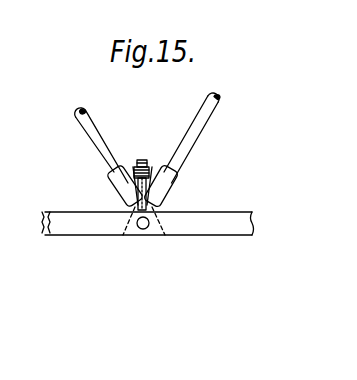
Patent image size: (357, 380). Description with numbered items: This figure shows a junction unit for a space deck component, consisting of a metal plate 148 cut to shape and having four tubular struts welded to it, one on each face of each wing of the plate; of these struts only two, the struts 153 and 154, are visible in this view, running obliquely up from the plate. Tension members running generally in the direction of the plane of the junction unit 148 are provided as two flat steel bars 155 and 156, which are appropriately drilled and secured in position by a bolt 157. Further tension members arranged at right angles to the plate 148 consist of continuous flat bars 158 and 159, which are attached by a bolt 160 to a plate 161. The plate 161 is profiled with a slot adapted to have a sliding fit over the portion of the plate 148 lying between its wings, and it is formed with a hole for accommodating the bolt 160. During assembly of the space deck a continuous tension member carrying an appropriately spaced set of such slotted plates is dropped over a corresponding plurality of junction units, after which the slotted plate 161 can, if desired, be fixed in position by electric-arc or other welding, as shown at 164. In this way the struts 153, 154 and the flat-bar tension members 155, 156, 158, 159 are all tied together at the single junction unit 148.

The junction unit plate 148 is at (160, 211).
The tubular strut 153 is at (202, 129).
The tubular strut 154 is at (100, 149).
The flat steel bar 155 is at (43, 235).
The flat steel bar 156 is at (217, 227).
The bolt 157 is at (145, 229).
The continuous flat bar 158 is at (150, 163).
The continuous flat bar 159 is at (141, 164).
The bolt 160 is at (172, 160).
The slotted plate 161 is at (142, 160).
The weld 164 is at (137, 208).